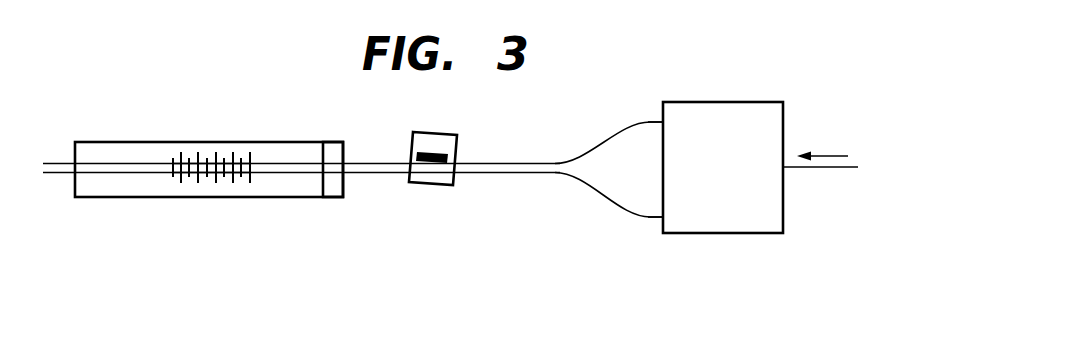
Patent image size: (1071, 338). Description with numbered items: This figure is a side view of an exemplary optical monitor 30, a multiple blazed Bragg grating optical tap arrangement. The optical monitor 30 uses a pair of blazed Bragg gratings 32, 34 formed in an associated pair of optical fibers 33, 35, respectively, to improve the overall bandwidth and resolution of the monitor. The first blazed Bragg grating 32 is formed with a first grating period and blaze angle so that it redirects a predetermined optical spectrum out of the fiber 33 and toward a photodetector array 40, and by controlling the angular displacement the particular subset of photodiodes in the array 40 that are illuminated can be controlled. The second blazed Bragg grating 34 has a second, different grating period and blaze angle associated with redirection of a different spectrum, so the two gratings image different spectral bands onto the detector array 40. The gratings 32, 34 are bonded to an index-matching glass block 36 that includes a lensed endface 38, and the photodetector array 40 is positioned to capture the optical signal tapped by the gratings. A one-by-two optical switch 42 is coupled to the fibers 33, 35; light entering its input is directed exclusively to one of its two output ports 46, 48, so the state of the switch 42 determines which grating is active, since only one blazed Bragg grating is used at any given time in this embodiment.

The optical monitor 30 is at (525, 234).
The first blazed Bragg grating 32 is at (173, 161).
The first optical fiber 33 is at (580, 152).
The second blazed Bragg grating 34 is at (183, 178).
The second optical fiber 35 is at (578, 186).
The index-matching glass block 36 is at (295, 147).
The lensed endface 38 is at (337, 196).
The photodetector array 40 is at (453, 186).
The 1×2 optical switch 42 is at (773, 102).
The first output port 46 is at (622, 127).
The second output port 48 is at (611, 202).